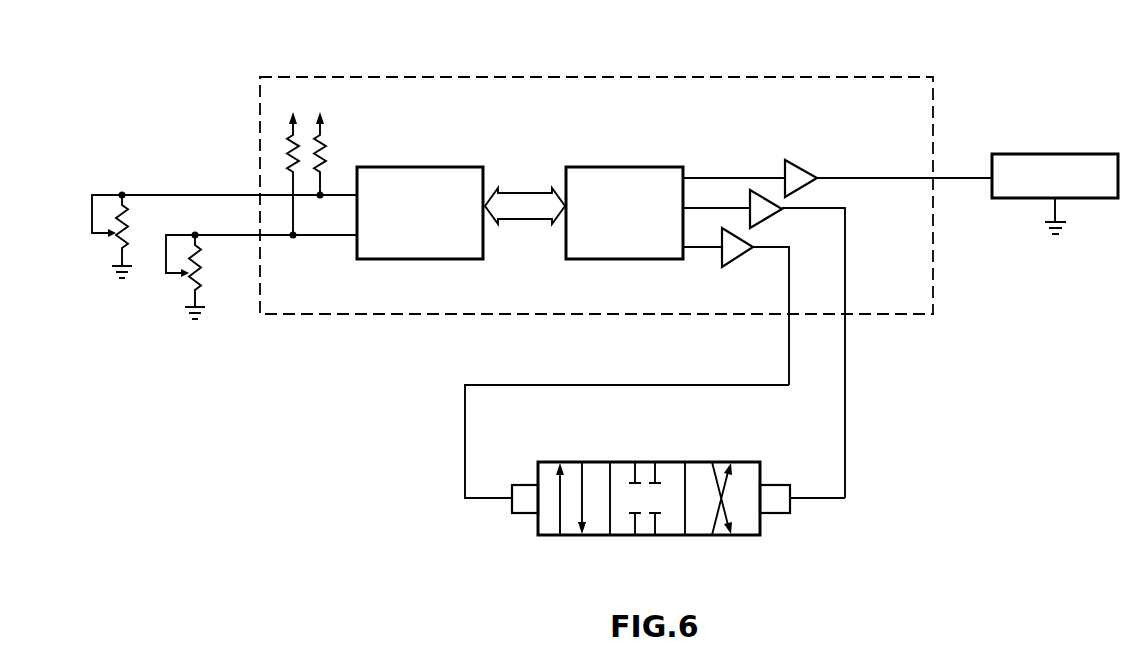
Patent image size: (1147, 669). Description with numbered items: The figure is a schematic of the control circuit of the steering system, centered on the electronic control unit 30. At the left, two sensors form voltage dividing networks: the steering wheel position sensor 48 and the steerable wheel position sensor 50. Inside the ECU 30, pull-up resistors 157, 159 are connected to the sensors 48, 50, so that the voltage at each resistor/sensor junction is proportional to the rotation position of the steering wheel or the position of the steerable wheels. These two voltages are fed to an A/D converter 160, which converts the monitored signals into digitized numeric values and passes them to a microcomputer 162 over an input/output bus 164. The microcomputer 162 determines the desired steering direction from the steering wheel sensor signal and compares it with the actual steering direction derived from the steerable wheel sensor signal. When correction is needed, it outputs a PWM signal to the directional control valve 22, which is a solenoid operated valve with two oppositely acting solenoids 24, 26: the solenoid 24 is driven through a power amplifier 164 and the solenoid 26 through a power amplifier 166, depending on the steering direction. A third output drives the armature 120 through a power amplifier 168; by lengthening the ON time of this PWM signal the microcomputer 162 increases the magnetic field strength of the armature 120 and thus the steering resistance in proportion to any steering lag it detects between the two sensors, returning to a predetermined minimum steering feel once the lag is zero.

The electronic control unit 30 is at (898, 68).
The steering wheel position sensor 48 is at (102, 243).
The steerable wheel position sensor 50 is at (186, 276).
The pull-up resistor 157 is at (323, 156).
The pull-up resistor 159 is at (291, 150).
The A/D converter 160 is at (450, 167).
The microcomputer 162 is at (624, 270).
The input/output bus 164 is at (521, 208).
The power amplifier 166 is at (761, 211).
The power amplifier 168 is at (796, 181).
The armature 120 is at (1086, 133).
The directional control valve 22 is at (625, 560).
The solenoid 24 is at (528, 505).
The solenoid 26 is at (778, 505).